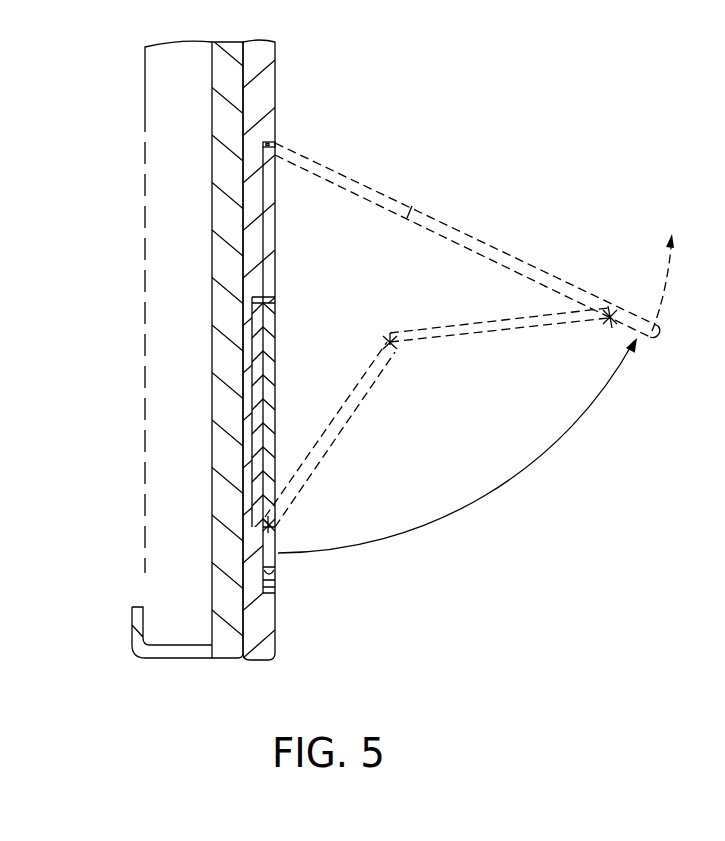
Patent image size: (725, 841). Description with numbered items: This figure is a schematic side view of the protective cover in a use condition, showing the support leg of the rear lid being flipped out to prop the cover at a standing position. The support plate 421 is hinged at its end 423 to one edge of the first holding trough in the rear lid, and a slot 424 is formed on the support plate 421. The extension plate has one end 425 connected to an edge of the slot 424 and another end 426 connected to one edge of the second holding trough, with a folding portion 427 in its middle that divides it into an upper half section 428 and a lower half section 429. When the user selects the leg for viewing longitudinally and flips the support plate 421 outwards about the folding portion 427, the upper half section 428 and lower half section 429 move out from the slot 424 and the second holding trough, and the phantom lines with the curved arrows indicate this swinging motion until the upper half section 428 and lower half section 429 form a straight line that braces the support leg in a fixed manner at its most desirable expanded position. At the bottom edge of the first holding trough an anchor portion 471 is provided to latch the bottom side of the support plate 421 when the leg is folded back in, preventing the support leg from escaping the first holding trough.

The support plate 421 is at (272, 236).
The end of support plate 423 is at (272, 140).
The slot 424 is at (488, 245).
The end of extension plate 425 is at (605, 325).
The other end of extension plate 426 is at (275, 542).
The folding portion 427 is at (402, 362).
The upper half section 428 is at (477, 322).
The lower half section 429 is at (347, 408).
The anchor portion 471 is at (268, 590).